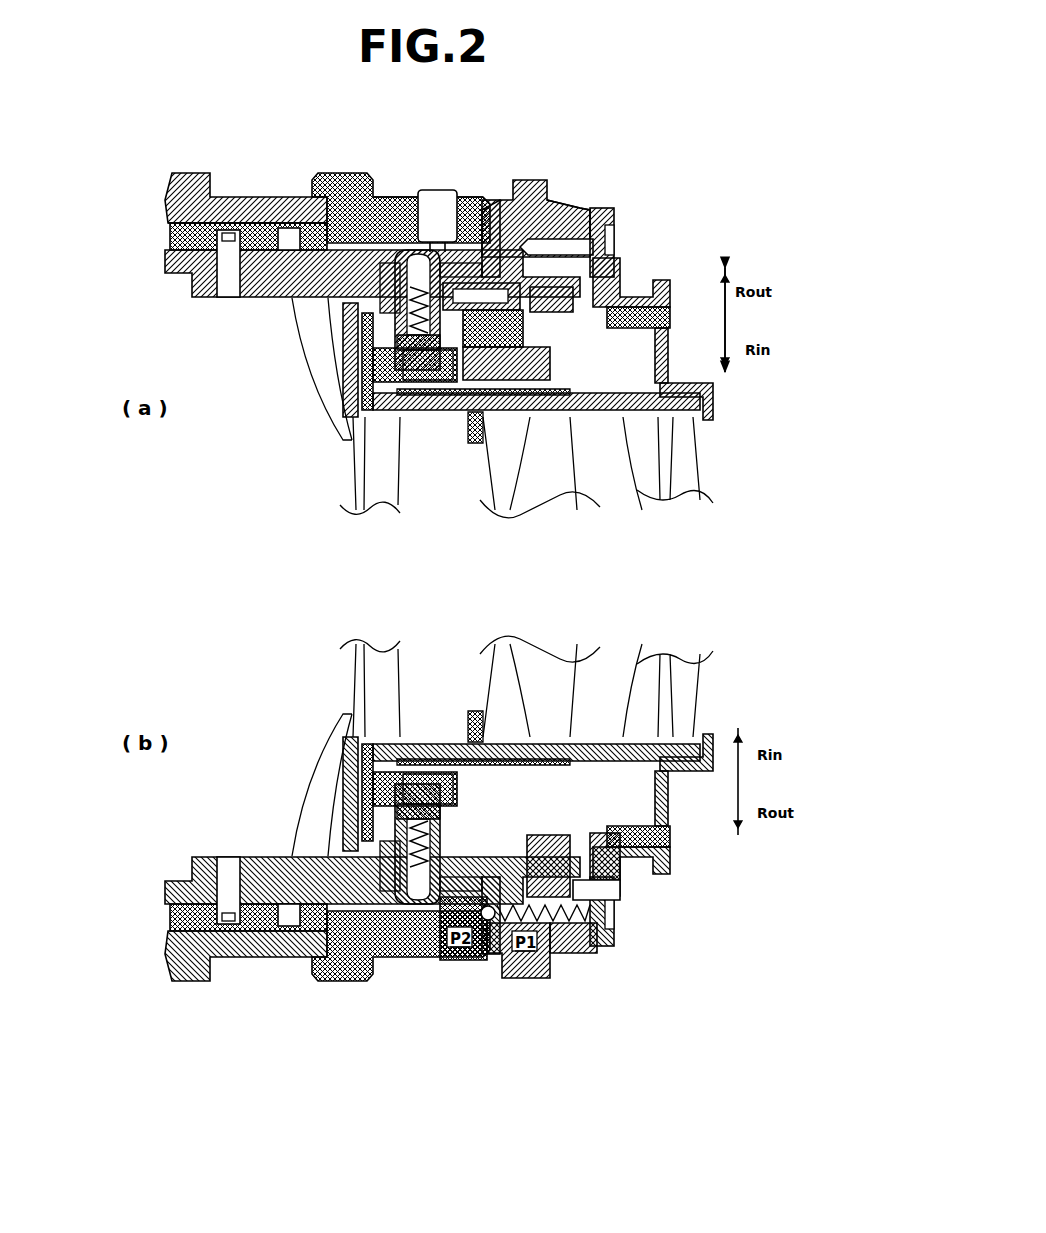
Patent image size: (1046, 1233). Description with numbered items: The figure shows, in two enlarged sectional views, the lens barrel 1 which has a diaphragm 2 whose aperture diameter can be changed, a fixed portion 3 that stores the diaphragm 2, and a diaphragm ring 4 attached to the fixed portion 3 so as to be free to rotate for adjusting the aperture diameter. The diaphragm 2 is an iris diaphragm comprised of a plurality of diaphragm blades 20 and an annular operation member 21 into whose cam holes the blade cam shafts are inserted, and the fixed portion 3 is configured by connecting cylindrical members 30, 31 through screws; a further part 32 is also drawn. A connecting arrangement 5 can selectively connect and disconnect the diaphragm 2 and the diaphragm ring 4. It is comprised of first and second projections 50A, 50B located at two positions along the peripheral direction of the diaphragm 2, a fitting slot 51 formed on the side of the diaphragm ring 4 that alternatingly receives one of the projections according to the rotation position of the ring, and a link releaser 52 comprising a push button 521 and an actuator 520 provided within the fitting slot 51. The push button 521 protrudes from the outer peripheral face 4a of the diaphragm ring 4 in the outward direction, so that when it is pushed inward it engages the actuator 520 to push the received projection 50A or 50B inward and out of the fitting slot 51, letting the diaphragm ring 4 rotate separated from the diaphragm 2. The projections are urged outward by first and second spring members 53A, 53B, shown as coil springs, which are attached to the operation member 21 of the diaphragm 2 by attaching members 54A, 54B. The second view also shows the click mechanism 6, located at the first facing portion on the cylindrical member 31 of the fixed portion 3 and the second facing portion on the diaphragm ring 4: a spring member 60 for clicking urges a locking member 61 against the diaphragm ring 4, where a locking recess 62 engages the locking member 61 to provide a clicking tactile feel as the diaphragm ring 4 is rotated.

The lens barrel 1 is at (667, 170).
The diaphragm 2 is at (273, 134).
The fixed portion 3 is at (190, 220).
The diaphragm ring 4 is at (334, 186).
The outer peripheral face 4a is at (388, 197).
The connecting arrangement 5 is at (530, 124).
The click mechanism 6 is at (523, 983).
The diaphragm blades 20 is at (343, 300).
The operation member 21 is at (372, 300).
The cylindrical member 30 is at (220, 197).
The cylindrical member 31 is at (584, 205).
The flange 32 is at (233, 197).
The first projection 50A is at (530, 180).
The second projection 50B is at (374, 935).
The fitting slot 51 is at (447, 255).
The link releaser 52 is at (428, 189).
The actuator 520 is at (449, 155).
The push button 521 is at (432, 188).
The first spring member 53A is at (548, 202).
The second spring member 53B is at (420, 895).
The attaching member 54A is at (600, 241).
The attaching member 54B is at (583, 830).
The spring member for clicking 60 is at (574, 976).
The locking member 61 is at (515, 957).
The locking recess 62 is at (447, 942).